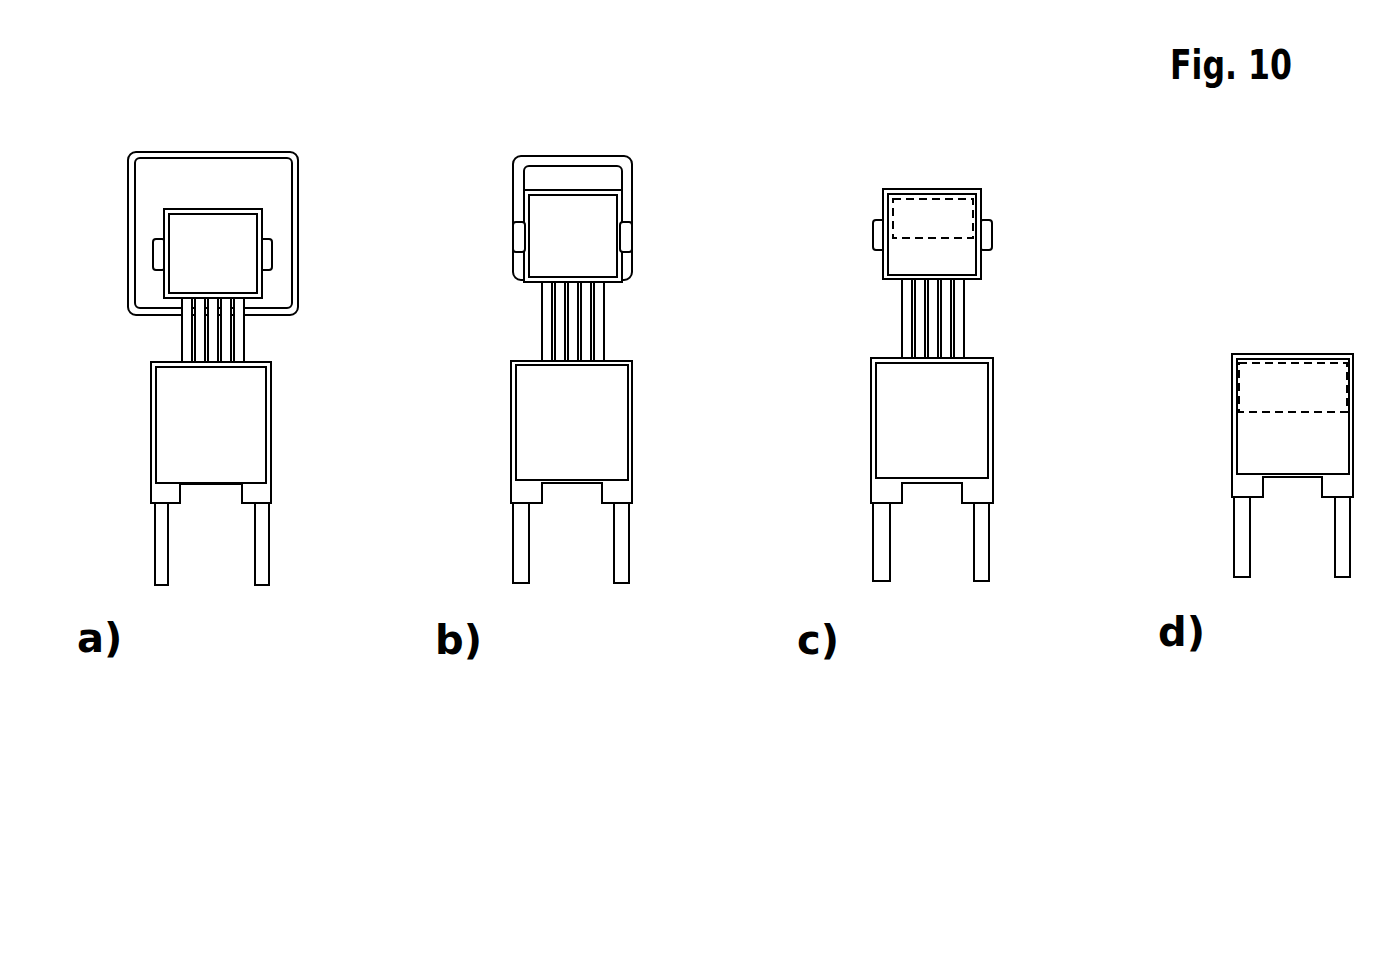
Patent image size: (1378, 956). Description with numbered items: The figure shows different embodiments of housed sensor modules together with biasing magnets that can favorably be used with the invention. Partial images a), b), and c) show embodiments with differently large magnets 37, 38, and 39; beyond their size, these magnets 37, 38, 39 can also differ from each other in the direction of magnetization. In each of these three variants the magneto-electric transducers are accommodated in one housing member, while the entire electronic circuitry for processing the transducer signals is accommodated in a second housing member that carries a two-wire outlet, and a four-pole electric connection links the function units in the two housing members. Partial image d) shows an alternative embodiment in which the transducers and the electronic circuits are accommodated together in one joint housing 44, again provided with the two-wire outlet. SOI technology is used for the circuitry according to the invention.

The magnet 37 is at (212, 180).
The magnet 38 is at (573, 178).
The magnet 39 is at (933, 213).
The joint housing 44 is at (1265, 439).